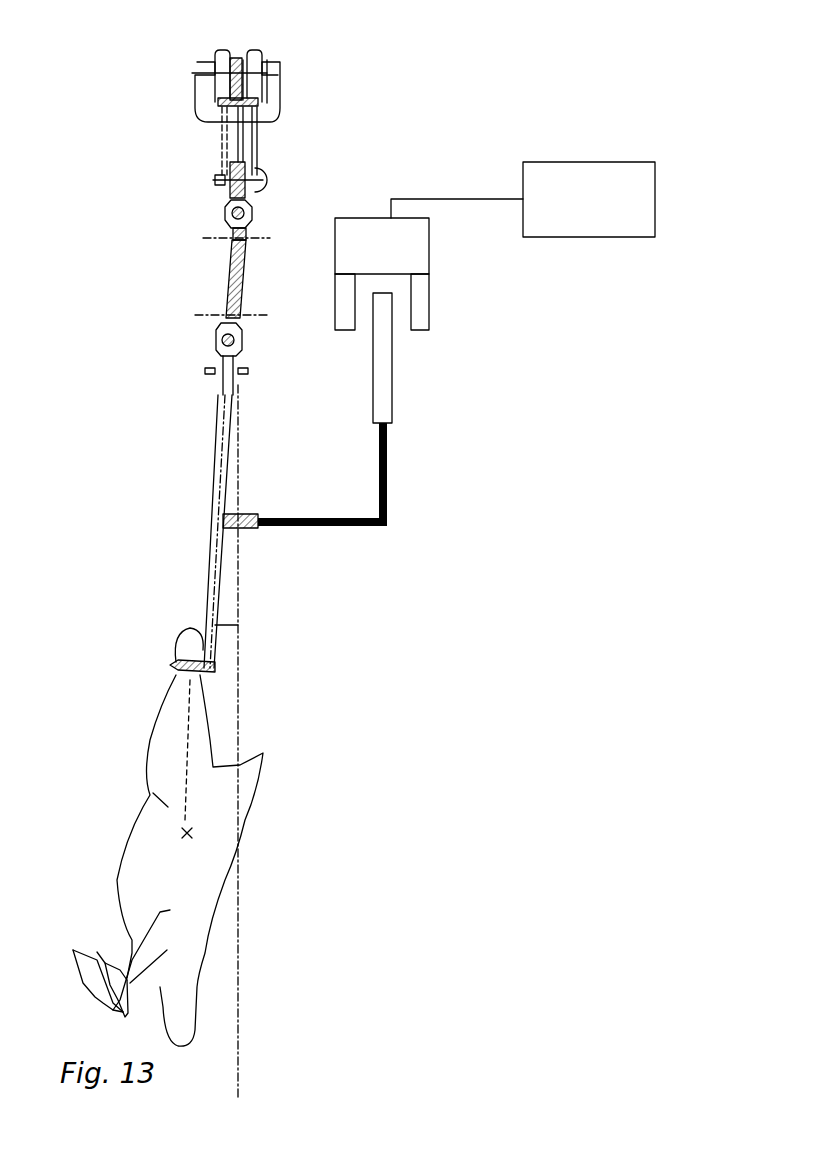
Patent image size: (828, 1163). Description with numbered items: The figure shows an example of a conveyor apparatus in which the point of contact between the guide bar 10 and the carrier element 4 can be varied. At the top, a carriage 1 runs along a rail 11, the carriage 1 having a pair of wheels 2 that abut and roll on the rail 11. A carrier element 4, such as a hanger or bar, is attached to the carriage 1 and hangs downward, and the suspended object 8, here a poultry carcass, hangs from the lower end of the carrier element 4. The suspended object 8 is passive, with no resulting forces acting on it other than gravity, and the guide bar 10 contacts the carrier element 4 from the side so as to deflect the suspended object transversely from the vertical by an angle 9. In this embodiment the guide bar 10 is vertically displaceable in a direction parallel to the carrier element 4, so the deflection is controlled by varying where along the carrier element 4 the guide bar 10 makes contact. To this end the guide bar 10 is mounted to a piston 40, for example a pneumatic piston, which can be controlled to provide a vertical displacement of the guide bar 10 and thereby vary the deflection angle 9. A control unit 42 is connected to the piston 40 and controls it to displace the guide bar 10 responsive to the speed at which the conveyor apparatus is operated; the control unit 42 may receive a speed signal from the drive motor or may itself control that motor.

The carriage 1 is at (200, 89).
The wheels 2 is at (203, 55).
The carrier element 4 is at (196, 436).
The suspended object 8 is at (186, 837).
The angle 9 is at (268, 742).
The guide bar 10 is at (280, 488).
The rail 11 is at (287, 150).
The piston 40 is at (466, 370).
The control unit 42 is at (537, 174).